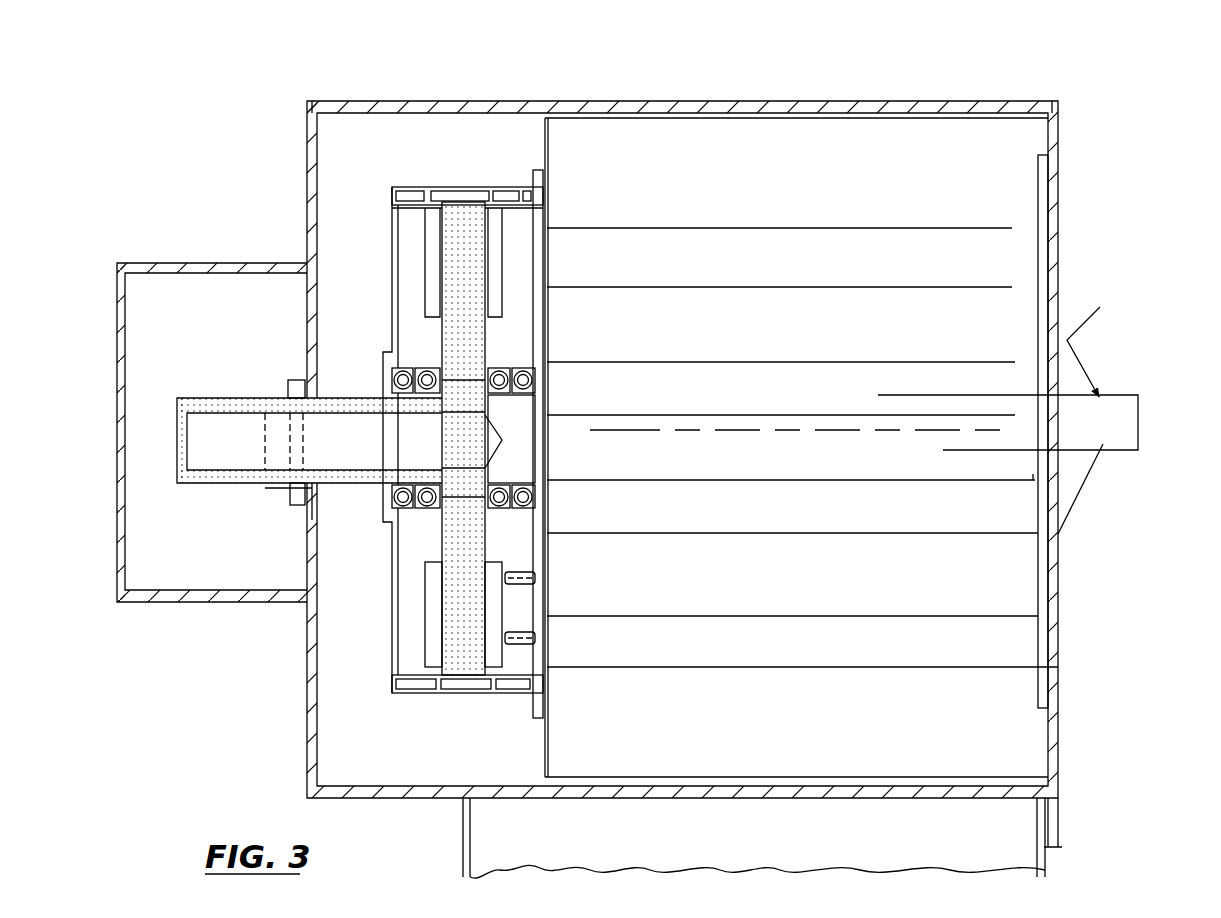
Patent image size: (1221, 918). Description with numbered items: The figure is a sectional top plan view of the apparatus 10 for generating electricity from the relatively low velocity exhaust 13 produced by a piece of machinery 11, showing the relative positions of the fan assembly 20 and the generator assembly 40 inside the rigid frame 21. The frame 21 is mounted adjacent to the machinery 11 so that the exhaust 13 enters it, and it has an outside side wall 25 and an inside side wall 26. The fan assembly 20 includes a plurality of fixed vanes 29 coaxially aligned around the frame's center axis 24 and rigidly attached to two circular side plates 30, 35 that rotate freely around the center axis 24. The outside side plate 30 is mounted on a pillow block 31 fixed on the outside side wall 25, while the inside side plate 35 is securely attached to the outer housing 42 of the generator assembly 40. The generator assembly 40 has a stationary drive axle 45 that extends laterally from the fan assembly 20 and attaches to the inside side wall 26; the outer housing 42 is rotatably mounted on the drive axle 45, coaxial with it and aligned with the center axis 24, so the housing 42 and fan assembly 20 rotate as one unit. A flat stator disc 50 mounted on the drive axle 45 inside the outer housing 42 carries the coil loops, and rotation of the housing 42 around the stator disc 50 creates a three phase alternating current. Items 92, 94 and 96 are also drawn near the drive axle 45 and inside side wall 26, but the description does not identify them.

The apparatus 10 is at (266, 77).
The piece of machinery 11 is at (463, 842).
The exhaust 13 is at (740, 806).
The fan assembly 20 is at (740, 133).
The rigid frame 21 is at (306, 147).
The center axis 24 is at (688, 430).
The outside side wall 25 is at (1058, 198).
The inside side wall 26 is at (307, 222).
The fixed vanes 29 is at (830, 178).
The outside side plate 30 is at (1031, 187).
The pillow block 31 is at (1097, 412).
The inside side plate 35 is at (542, 222).
The generator assembly 40 is at (406, 167).
The outer housing 42 is at (392, 286).
The drive axle 45 is at (238, 398).
The stator disc 50 is at (462, 300).
The nut 92 is at (282, 492).
The bolt 94 is at (293, 380).
The enclosure 96 is at (117, 293).